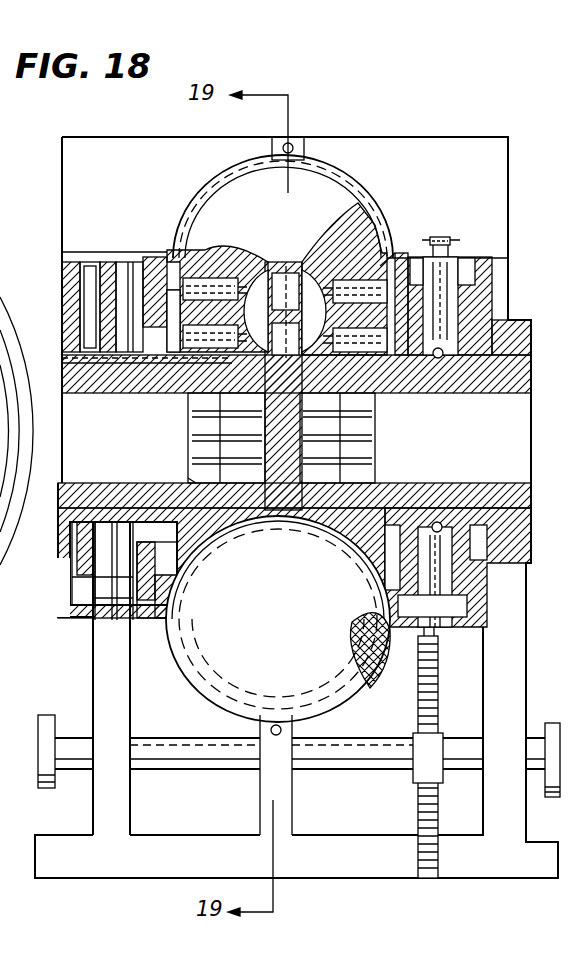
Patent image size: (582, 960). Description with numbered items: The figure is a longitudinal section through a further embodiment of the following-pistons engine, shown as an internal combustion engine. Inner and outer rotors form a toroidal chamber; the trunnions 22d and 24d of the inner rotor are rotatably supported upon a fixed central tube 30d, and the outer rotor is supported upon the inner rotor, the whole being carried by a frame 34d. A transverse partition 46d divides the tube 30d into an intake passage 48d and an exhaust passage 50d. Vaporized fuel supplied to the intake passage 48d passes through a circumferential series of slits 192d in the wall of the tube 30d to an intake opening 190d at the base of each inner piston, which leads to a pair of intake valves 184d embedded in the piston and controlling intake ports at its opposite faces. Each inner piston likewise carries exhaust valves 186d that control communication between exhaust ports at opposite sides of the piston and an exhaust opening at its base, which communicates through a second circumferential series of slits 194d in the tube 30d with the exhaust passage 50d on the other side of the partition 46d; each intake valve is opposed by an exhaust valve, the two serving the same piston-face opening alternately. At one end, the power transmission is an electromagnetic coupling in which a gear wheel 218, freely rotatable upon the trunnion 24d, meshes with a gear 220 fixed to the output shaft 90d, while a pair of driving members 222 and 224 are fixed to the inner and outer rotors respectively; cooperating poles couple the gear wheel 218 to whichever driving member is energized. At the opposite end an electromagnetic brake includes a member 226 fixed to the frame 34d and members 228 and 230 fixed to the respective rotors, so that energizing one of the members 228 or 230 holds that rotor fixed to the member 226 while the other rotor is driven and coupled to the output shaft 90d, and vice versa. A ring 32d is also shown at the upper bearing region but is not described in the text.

The upper bearing ring 32d is at (298, 150).
The intake valves 184d is at (306, 282).
The exhaust valves 186d is at (258, 290).
The brake coupling member 230 is at (152, 262).
The frame-fixed coupling member 226 is at (100, 259).
The brake coupling member 228 is at (88, 288).
The driving member 224 is at (402, 256).
The gear wheel 218 is at (448, 238).
The driving member 222 is at (488, 264).
The fixed central tube 30d is at (530, 378).
The exhaust slits 194d is at (236, 382).
The exhaust passage 50d is at (46, 433).
The intake passage 48d is at (547, 442).
The intake opening 190d is at (343, 383).
The intake slits 192d is at (323, 442).
The trunnion 22d is at (88, 514).
The transverse partition 46d is at (281, 508).
The trunnion 24d is at (478, 520).
The frame 34d is at (100, 676).
The gear 220 is at (440, 700).
The output shaft 90d is at (352, 755).